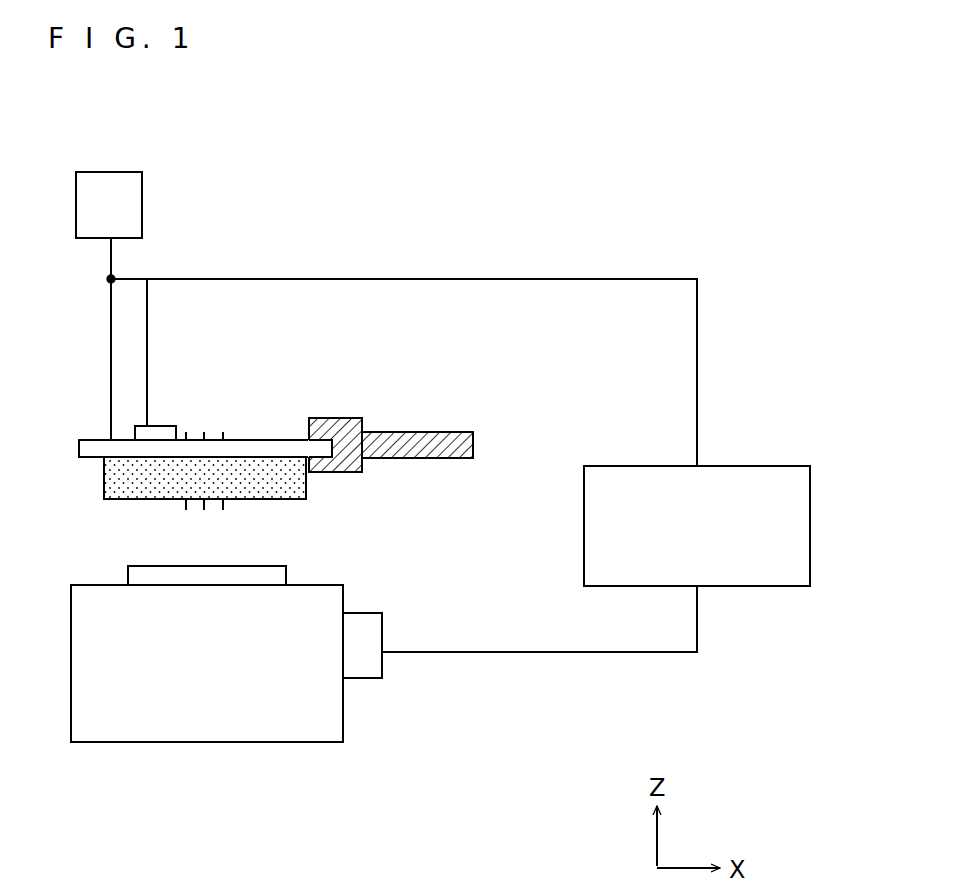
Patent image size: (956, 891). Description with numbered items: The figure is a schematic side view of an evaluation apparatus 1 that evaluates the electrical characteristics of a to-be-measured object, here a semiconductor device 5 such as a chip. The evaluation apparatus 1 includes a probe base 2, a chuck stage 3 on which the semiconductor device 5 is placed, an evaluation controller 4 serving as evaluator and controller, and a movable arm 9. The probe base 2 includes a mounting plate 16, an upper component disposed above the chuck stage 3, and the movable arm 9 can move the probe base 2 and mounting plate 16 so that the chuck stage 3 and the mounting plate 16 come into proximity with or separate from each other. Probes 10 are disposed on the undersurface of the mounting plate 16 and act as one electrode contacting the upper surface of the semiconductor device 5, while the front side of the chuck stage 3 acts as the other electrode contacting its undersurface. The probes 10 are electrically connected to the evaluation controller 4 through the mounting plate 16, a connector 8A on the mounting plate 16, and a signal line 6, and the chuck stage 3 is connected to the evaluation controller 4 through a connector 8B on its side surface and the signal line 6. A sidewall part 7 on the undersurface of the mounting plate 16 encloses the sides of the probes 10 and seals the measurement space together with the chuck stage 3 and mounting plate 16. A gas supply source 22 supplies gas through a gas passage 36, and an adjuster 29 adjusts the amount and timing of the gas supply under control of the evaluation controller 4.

The evaluation apparatus 1 is at (740, 146).
The probe base 2 is at (332, 497).
The chuck stage 3 is at (265, 744).
The evaluation controller 4 is at (812, 537).
The semiconductor device 5 is at (208, 573).
The signal line 6 is at (454, 278).
The sidewall part 7 is at (112, 480).
The connector 8A is at (142, 433).
The connector 8B is at (369, 680).
The movable arm 9 is at (408, 431).
The probe 10 is at (183, 507).
The mounting plate 16 is at (85, 449).
The gas supply source 22 is at (130, 203).
The adjuster 29 is at (107, 279).
The gas passage 36 is at (108, 325).